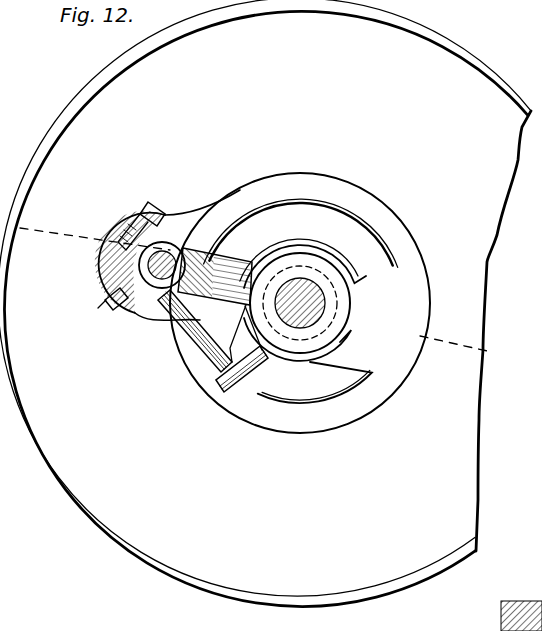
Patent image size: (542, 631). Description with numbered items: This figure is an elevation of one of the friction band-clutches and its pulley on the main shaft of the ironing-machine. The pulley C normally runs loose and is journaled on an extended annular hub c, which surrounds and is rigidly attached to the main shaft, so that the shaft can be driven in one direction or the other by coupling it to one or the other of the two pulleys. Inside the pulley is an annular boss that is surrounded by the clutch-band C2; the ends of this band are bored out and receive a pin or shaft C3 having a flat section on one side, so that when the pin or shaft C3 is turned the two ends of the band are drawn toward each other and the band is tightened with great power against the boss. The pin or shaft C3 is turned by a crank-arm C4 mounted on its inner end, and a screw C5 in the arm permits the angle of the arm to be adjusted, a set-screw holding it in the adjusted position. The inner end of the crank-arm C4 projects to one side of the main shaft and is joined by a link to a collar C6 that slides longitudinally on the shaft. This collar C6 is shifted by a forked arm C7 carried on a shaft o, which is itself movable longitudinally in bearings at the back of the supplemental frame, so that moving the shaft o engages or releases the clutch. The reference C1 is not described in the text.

The pulley C is at (265, 303).
The clutch-band C2 is at (386, 178).
The ring C1 is at (316, 206).
The annular hub c is at (341, 264).
The forked arm C7 is at (234, 265).
The shaft o is at (172, 259).
The pin or shaft C3 is at (110, 304).
The screw C5 is at (158, 207).
The crank-arm C4 is at (180, 330).
The collar C6 is at (228, 394).